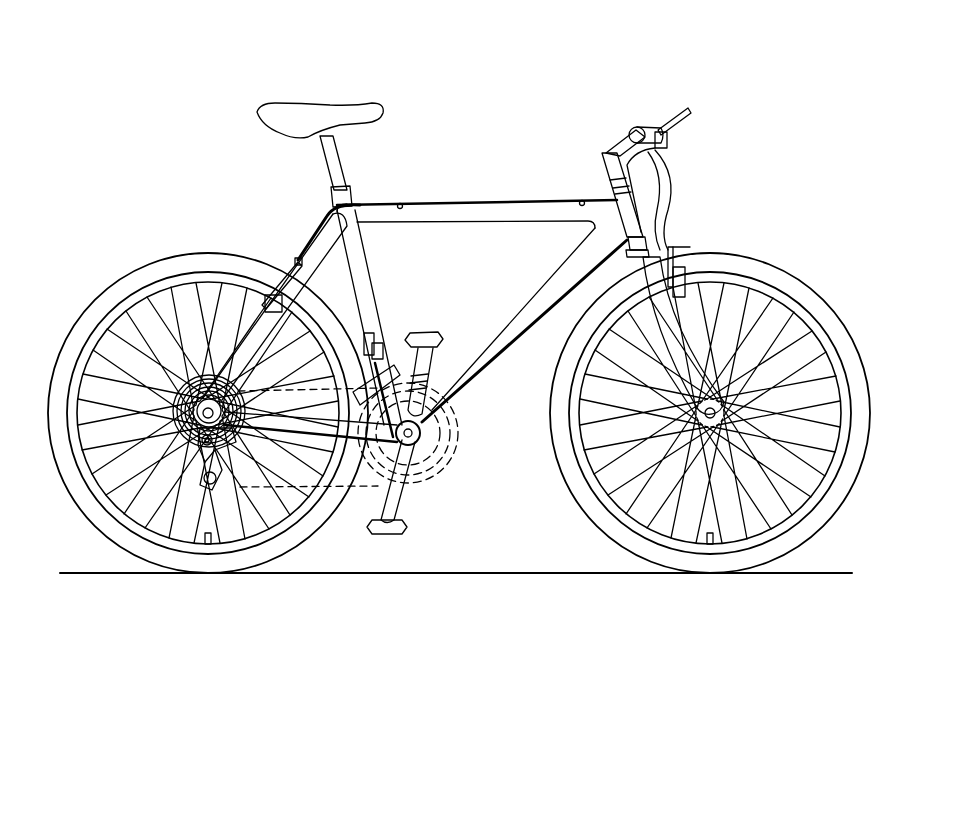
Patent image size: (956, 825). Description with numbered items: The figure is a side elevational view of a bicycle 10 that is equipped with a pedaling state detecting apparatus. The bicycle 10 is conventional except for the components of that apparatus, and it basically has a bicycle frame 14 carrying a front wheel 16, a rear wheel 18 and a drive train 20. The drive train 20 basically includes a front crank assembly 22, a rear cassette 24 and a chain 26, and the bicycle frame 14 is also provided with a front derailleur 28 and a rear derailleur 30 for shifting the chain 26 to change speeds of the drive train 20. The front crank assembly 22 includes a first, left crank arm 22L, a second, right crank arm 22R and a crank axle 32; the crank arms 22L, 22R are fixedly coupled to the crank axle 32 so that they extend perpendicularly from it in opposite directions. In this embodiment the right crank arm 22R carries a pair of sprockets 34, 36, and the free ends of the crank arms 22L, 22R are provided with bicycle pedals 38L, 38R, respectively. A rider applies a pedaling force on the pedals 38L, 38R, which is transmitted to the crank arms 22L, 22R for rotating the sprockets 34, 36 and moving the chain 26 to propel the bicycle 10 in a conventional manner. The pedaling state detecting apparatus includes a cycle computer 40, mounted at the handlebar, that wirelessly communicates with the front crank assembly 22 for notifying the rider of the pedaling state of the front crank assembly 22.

The bicycle 10 is at (746, 156).
The bicycle frame 14 is at (478, 212).
The front wheel 16 is at (744, 256).
The rear wheel 18 is at (182, 252).
The drive train 20 is at (482, 412).
The front crank assembly 22 is at (445, 497).
The first (left) bicycle crank arm 22L is at (440, 358).
The second (right) crank arm 22R is at (406, 503).
The rear cassette 24 is at (143, 318).
The chain 26 is at (245, 485).
The front derailleur 28 is at (388, 356).
The rear derailleur 30 is at (188, 497).
The crank axle 32 is at (422, 436).
The sprocket 34 is at (442, 465).
The sprocket 36 is at (458, 455).
The bicycle pedal 38L is at (430, 329).
The bicycle pedal 38R is at (393, 538).
The cycle computer 40 is at (670, 104).